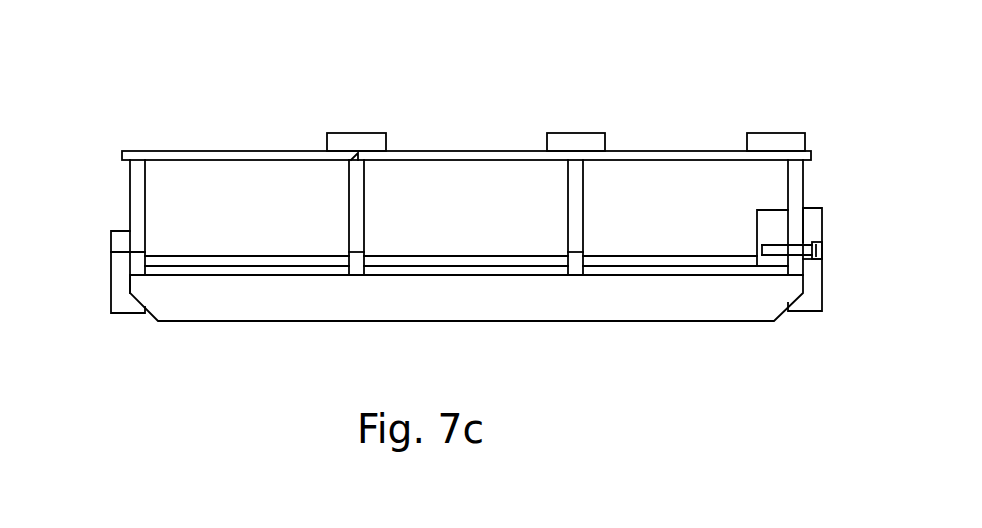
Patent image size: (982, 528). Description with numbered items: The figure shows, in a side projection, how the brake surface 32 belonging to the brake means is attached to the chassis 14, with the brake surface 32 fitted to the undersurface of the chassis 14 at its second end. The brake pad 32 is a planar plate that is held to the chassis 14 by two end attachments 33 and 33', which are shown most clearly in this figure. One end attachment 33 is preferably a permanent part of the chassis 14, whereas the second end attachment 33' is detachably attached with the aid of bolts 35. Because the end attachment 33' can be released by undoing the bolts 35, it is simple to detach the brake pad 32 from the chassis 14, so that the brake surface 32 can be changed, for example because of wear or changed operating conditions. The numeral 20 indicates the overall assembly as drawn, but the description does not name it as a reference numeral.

The carrier plate 20 is at (666, 150).
The chassis 14 is at (493, 226).
The brake surface 32 is at (485, 313).
The end attachment 33 is at (97, 248).
The end attachment 33' is at (812, 294).
The bolts 35 is at (821, 248).